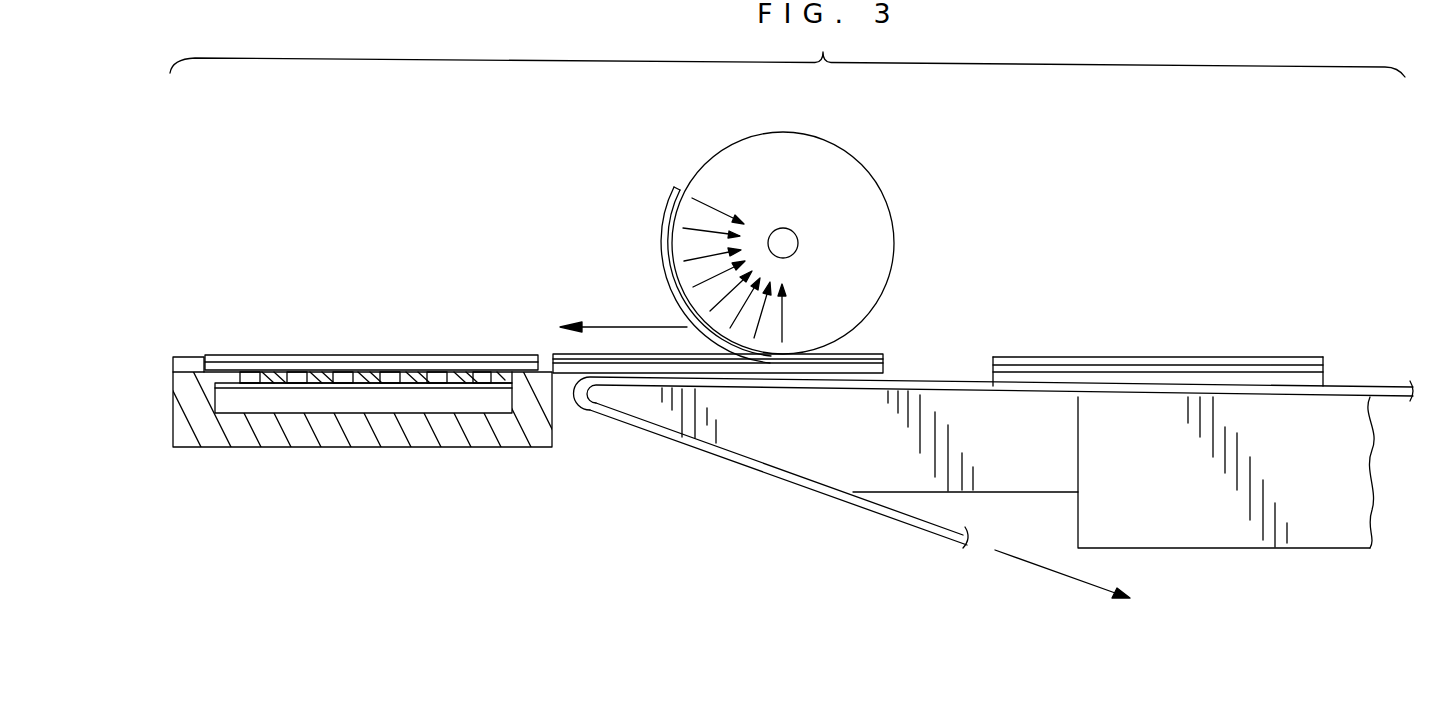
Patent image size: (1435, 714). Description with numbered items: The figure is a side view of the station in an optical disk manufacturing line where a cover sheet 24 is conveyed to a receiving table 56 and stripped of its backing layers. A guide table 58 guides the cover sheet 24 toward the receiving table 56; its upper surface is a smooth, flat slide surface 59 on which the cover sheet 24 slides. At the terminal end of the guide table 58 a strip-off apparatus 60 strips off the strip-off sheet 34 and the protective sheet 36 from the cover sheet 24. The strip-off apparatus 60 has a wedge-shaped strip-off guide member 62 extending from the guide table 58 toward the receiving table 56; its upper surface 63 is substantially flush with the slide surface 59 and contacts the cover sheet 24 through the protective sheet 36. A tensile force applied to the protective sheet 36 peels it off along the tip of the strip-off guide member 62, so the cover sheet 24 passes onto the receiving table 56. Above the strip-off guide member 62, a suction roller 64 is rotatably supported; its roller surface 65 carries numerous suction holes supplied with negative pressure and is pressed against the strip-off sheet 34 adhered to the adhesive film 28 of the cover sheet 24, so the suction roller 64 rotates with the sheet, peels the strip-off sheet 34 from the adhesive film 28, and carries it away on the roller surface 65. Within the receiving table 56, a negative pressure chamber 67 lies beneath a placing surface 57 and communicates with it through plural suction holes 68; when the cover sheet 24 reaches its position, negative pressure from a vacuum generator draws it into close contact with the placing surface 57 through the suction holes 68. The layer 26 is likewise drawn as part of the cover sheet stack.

The cover sheet 24 is at (968, 237).
The substrate layer 26 is at (884, 377).
The adhesive film 28 is at (883, 356).
The strip-off sheet 34 is at (673, 207).
The protective sheet 36 is at (762, 475).
The receiving table 56 is at (174, 415).
The placing surface 57 is at (420, 373).
The guide table 58 is at (1300, 548).
The slide surface 59 is at (1350, 392).
The strip-off apparatus 60 is at (573, 198).
The strip-off guide member 62 is at (903, 492).
The upper surface 63 is at (950, 383).
The suction roller 64 is at (873, 174).
The roller surface 65 is at (745, 138).
The negative pressure chamber 67 is at (222, 397).
The suction holes 68 is at (300, 373).